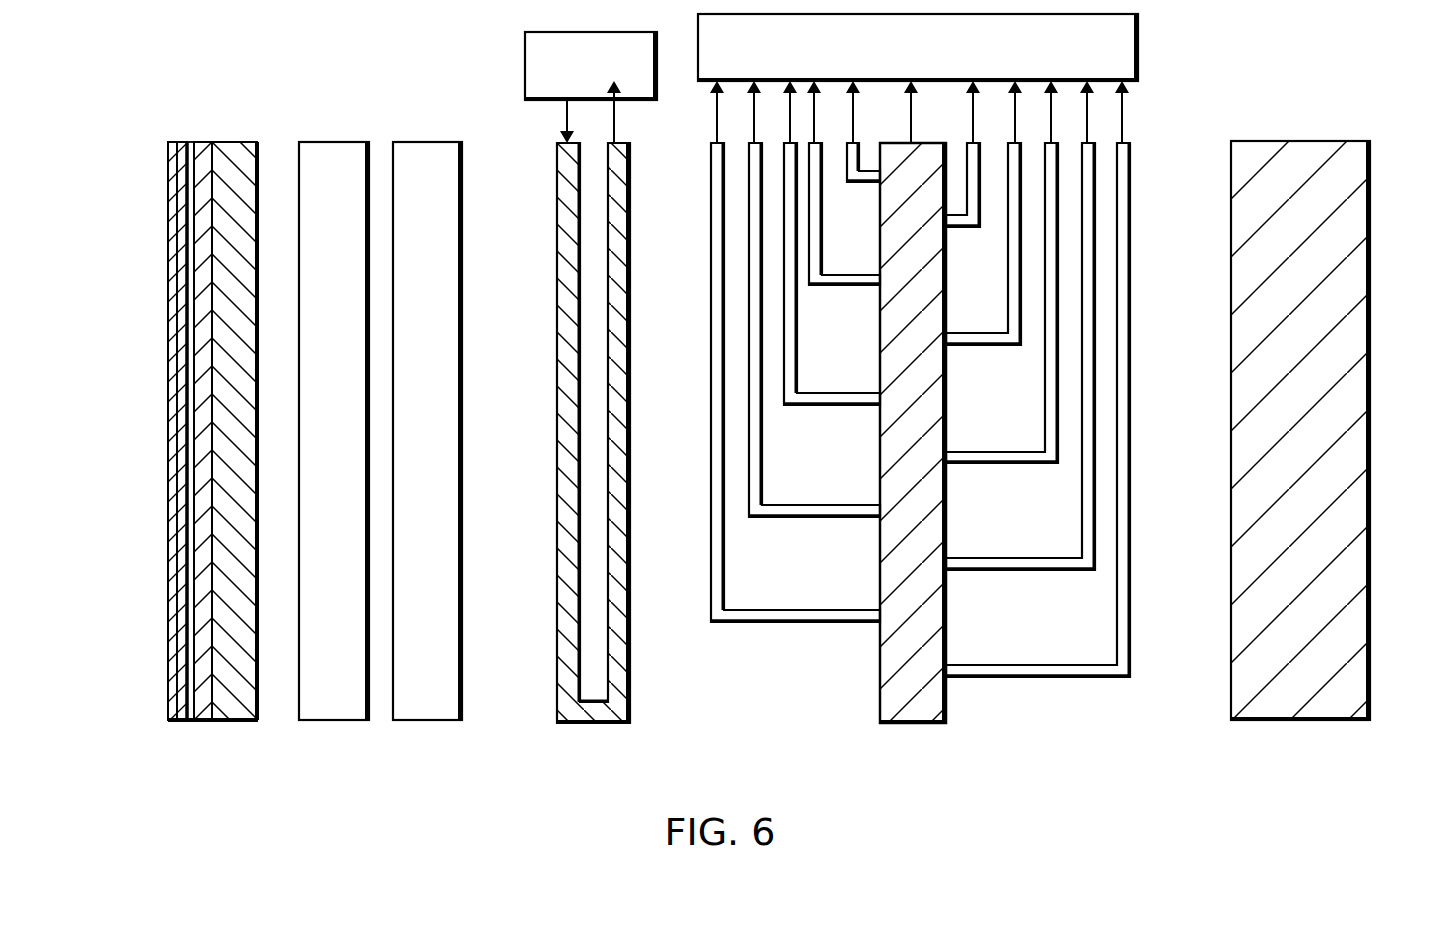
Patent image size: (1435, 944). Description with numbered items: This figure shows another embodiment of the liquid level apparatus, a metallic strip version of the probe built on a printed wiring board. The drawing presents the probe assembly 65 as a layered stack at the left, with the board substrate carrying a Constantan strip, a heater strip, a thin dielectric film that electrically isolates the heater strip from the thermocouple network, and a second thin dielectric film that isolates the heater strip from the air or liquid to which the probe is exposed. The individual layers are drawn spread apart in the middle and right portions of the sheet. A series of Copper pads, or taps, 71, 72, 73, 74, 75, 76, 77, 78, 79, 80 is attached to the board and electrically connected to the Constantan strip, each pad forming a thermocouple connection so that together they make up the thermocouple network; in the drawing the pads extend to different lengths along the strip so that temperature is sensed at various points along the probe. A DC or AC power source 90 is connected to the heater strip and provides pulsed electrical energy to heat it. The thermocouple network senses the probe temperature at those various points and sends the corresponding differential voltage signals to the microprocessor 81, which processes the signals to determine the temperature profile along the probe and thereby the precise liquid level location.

The layered electrode assembly 65 is at (165, 472).
The Copper pad 71 is at (862, 184).
The Copper pad 72 is at (965, 228).
The Copper pad 73 is at (844, 286).
The Copper pad 74 is at (990, 346).
The Copper pad 75 is at (827, 406).
The Copper pad 76 is at (1003, 464).
The Copper pad 77 is at (818, 518).
The Copper pad 78 is at (1032, 571).
The Copper pad 79 is at (798, 623).
The Copper pad 80 is at (1040, 678).
The microprocessor 81 is at (1138, 44).
The power source 90 is at (582, 32).